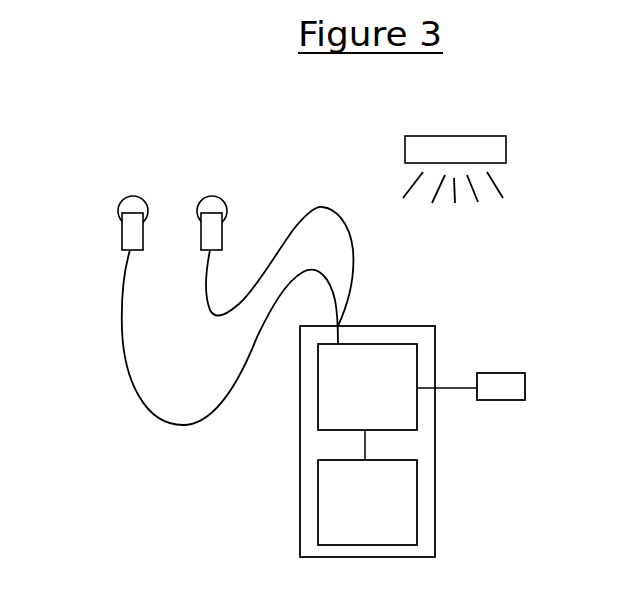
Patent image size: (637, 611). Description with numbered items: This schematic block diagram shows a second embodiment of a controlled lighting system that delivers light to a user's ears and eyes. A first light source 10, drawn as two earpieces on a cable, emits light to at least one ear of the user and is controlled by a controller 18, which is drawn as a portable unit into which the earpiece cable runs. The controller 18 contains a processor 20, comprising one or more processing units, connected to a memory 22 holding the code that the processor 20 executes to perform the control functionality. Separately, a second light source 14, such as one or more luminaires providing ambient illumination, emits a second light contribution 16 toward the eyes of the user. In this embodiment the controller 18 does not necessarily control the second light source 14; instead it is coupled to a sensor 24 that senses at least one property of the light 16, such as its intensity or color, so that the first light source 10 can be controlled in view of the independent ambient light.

The first light source 10 is at (122, 233).
The second light source 14 is at (506, 150).
The second light contribution 16 is at (492, 192).
The controller 18 is at (435, 513).
The processor 20 is at (318, 374).
The memory 22 is at (318, 480).
The sensor 24 is at (525, 385).